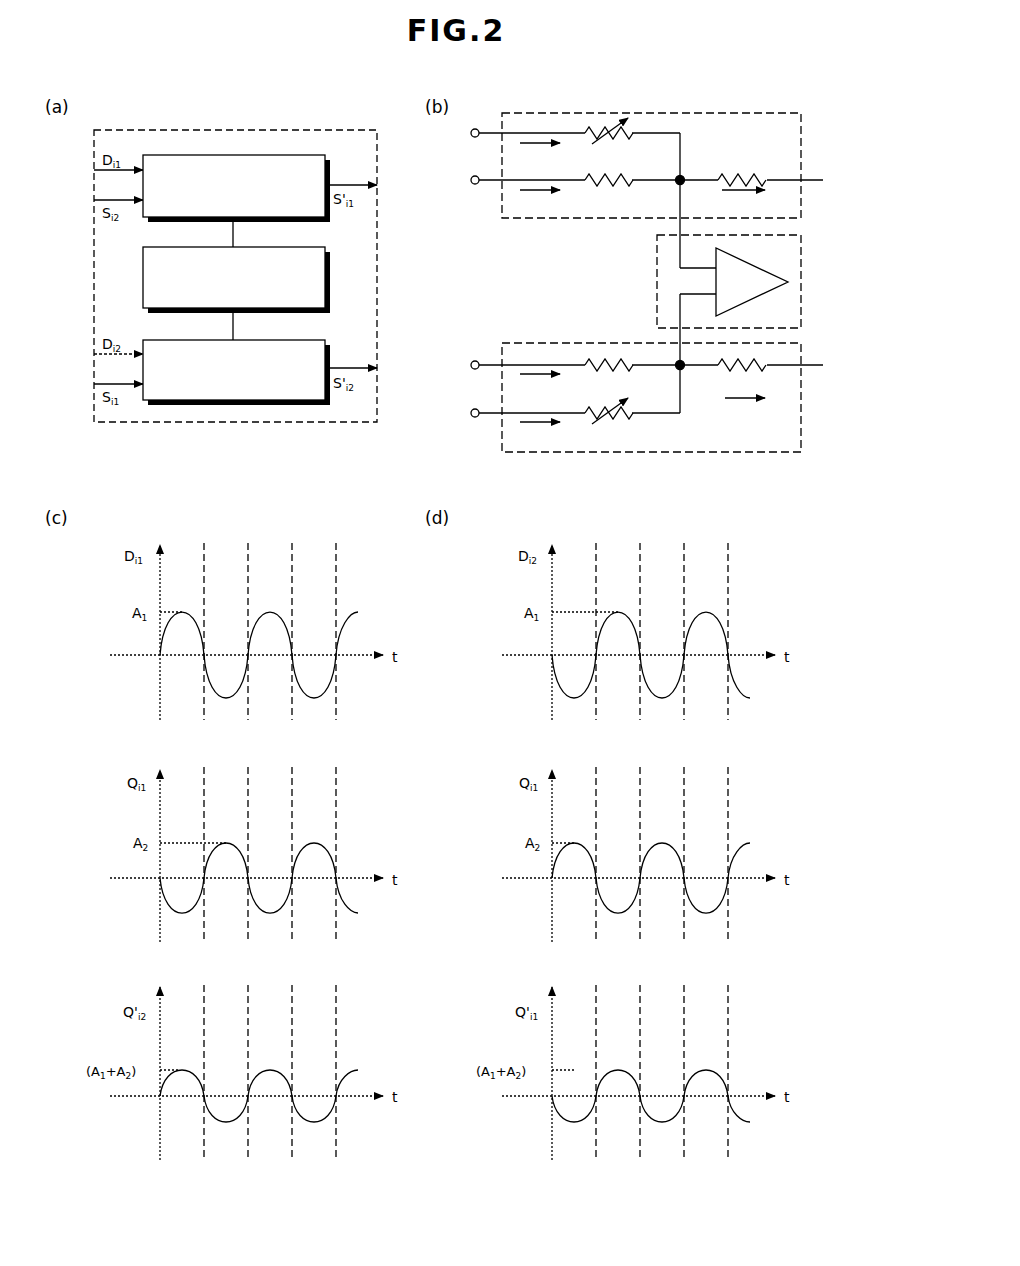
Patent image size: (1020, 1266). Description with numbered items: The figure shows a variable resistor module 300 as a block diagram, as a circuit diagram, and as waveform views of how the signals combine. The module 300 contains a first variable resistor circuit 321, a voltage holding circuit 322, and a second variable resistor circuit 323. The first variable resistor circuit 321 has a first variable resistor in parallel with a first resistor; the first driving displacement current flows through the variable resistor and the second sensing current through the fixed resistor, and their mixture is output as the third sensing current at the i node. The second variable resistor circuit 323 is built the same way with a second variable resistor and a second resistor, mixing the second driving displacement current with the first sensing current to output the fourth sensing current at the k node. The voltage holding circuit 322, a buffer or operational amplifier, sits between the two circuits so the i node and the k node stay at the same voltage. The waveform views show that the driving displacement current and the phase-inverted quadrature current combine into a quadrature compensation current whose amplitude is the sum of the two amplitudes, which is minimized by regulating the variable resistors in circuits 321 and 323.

The pixel driving circuit 300 is at (234, 128).
The first variable resistor circuit 321 is at (328, 167).
The voltage holding circuit 322 is at (328, 280).
The second variable resistor circuit 323 is at (328, 350).